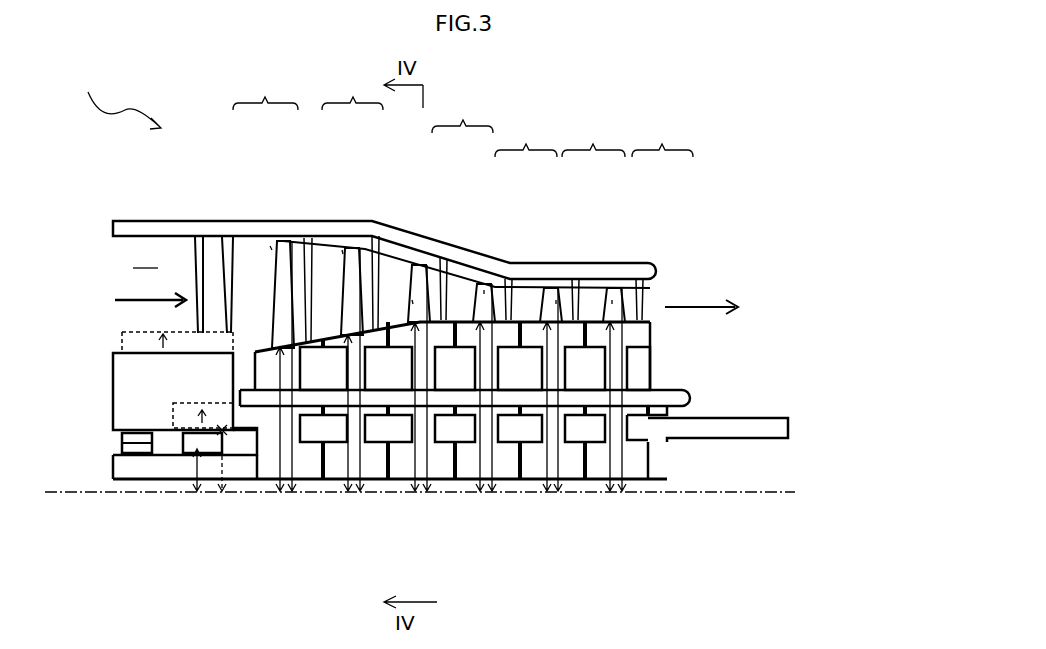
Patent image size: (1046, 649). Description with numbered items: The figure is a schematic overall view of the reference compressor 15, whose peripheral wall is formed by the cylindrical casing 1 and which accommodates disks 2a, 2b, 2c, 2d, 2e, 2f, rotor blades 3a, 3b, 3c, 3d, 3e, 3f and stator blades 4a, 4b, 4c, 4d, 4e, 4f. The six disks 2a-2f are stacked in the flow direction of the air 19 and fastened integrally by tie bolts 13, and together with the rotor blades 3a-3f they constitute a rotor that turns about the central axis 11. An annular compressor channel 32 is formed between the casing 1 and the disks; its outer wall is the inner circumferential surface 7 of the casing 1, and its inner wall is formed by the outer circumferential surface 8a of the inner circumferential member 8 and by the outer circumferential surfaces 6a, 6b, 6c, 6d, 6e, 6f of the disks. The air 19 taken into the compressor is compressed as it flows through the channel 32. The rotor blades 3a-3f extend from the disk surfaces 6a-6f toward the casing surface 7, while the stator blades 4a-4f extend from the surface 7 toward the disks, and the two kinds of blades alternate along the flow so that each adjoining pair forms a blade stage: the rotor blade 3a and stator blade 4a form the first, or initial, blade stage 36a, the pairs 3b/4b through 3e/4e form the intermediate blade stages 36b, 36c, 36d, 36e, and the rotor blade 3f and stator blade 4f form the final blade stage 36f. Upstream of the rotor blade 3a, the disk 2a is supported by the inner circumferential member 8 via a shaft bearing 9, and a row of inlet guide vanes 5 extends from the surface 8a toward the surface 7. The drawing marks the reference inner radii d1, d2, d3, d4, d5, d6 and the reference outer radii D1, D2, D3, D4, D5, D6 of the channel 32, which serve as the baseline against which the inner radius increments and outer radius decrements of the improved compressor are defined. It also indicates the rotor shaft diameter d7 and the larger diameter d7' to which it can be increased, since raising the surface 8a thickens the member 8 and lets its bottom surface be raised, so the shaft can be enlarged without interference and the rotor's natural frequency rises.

The casing 1 is at (150, 222).
The inlet guide vanes 5 is at (197, 257).
The inner circumferential surface 7 is at (240, 253).
The inner circumferential member 8 is at (112, 403).
The outer circumferential surface 8a is at (120, 330).
The shaft bearing 9 is at (118, 438).
The central axis 11 is at (710, 492).
The tie bolts 13 is at (676, 393).
The reference compressor 15 is at (113, 95).
The air 19 is at (127, 298).
The compressor channel 32 is at (145, 258).
The disk 2a is at (257, 468).
The disk 2b is at (335, 470).
The disk 2c is at (400, 470).
The disk 2d is at (470, 470).
The disk 2e is at (533, 470).
The disk 2f is at (598, 470).
The rotor blade 3a is at (278, 245).
The rotor blade 3b is at (345, 250).
The rotor blade 3c is at (418, 262).
The rotor blade 3d is at (485, 285).
The rotor blade 3e is at (549, 300).
The rotor blade 3f is at (613, 300).
The stator blade 4a is at (305, 246).
The stator blade 4b is at (373, 252).
The stator blade 4c is at (446, 270).
The stator blade 4d is at (513, 300).
The stator blade 4e is at (578, 300).
The stator blade 4f is at (645, 300).
The outer circumferential surface 6a is at (270, 246).
The outer circumferential surface 6b is at (342, 250).
The outer circumferential surface 6c is at (412, 300).
The outer circumferential surface 6d is at (484, 290).
The outer circumferential surface 6e is at (556, 300).
The outer circumferential surface 6f is at (612, 300).
The first blade stage 36a is at (273, 208).
The second blade stage 36b is at (352, 200).
The third blade stage 36c is at (450, 207).
The fourth blade stage 36d is at (515, 219).
The fifth blade stage 36e is at (582, 219).
The sixth blade stage 36f is at (648, 218).
The inner radius d1 is at (271, 419).
The inner radius d2 is at (340, 413).
The inner radius d3 is at (406, 407).
The inner radius d4 is at (471, 406).
The inner radius d5 is at (537, 406).
The inner radius d6 is at (601, 406).
The outer radius D1 is at (301, 366).
The outer radius D2 is at (370, 369).
The outer radius D3 is at (437, 378).
The outer radius D4 is at (501, 387).
The outer radius D5 is at (567, 389).
The outer radius D6 is at (633, 389).
The shaft diameter d7 is at (159, 503).
The increased shaft diameter d7' is at (193, 496).